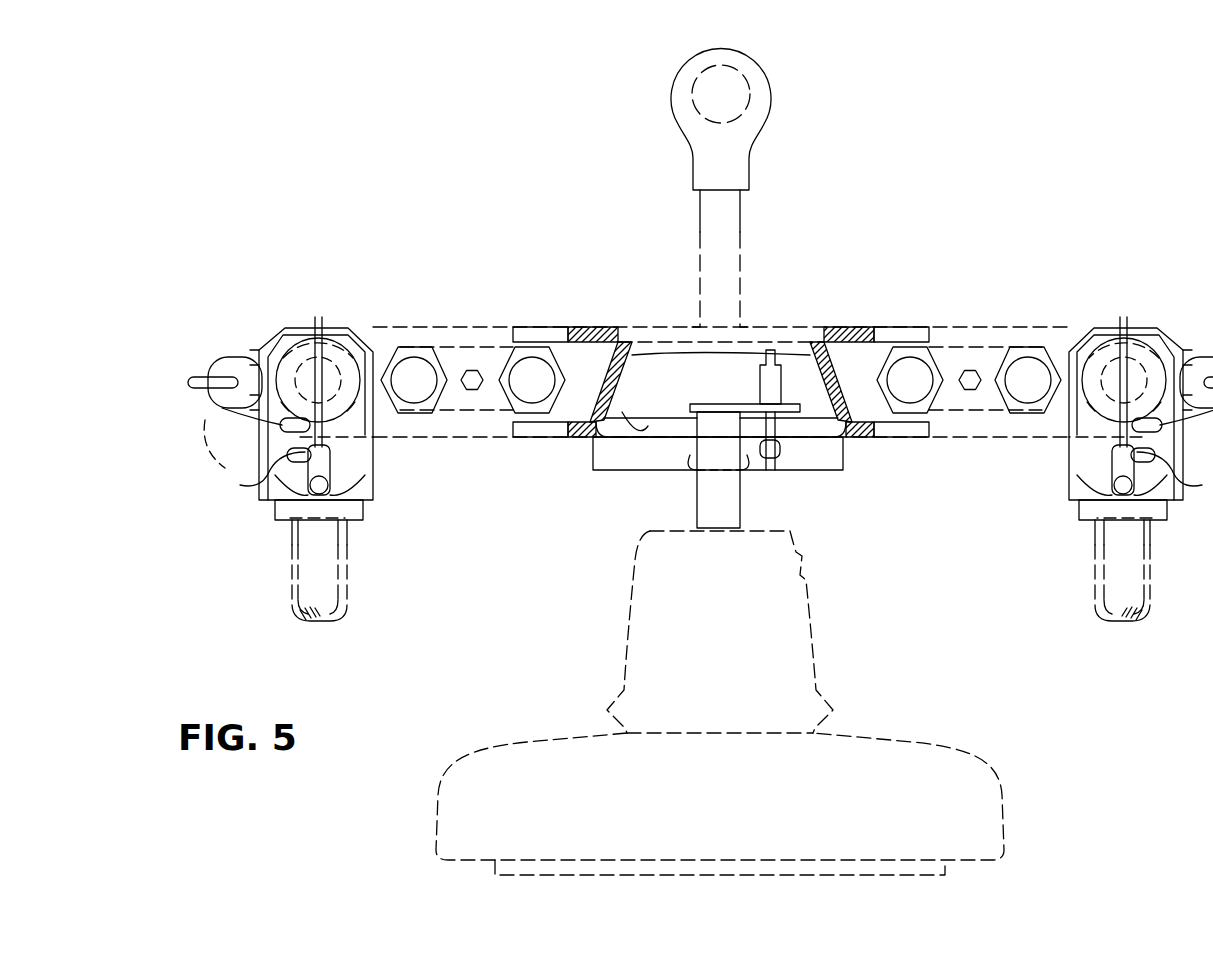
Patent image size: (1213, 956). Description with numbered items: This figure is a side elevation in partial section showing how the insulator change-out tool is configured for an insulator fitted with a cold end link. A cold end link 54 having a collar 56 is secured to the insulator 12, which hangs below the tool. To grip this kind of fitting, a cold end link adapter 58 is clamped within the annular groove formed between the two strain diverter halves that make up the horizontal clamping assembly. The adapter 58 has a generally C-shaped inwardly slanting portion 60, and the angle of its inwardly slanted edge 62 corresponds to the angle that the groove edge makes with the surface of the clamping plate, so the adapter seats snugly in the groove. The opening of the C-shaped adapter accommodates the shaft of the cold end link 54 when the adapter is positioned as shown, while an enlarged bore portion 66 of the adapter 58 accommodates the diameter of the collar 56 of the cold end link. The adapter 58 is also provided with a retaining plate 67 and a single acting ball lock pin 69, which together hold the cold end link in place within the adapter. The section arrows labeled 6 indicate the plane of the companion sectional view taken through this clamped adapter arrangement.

The section line 6- 6 is at (517, 437).
The insulator 12 is at (828, 650).
The cold end link 54 is at (727, 240).
The collar 56 is at (745, 457).
The cold end link adapter 58 is at (695, 406).
The inwardly slanting portion 60 is at (660, 430).
The inwardly slanted edge 62 is at (718, 472).
The enlarged bore portion 66 is at (700, 457).
The retaining plate 67 is at (746, 404).
The single acting ball lock pin 69 is at (775, 356).